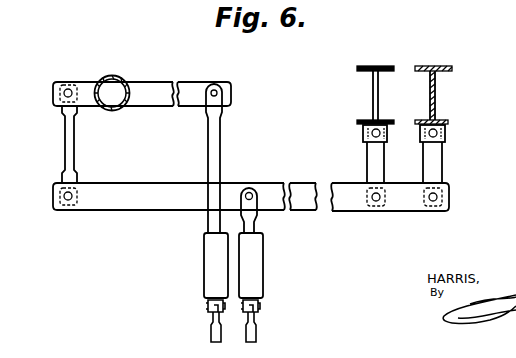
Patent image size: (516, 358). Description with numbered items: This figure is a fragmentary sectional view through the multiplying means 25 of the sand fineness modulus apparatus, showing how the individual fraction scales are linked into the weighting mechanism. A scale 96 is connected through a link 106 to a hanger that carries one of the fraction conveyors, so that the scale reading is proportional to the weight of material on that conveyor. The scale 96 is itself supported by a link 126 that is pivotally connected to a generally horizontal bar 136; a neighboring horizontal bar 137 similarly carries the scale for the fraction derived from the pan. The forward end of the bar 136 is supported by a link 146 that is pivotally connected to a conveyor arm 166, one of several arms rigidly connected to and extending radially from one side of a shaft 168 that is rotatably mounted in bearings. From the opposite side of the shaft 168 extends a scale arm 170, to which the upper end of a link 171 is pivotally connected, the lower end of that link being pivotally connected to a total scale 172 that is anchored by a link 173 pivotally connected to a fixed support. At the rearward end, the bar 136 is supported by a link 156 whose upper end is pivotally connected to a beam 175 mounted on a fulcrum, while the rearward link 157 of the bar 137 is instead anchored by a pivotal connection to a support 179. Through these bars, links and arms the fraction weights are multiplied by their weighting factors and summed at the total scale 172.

The multiplying means 25 is at (447, 111).
The scale 96 is at (262, 271).
The link 106 is at (257, 335).
The link 126 is at (255, 222).
The horizontal bar 136 is at (267, 190).
The horizontal bar 137 is at (321, 184).
The link 146 is at (65, 147).
The link 156 is at (437, 158).
The link 157 is at (371, 158).
The conveyor arm 166 is at (84, 82).
The shaft 168 is at (114, 76).
The scale arm 170 is at (163, 85).
The link 171 is at (207, 150).
The total scale 172 is at (207, 259).
The link 173 is at (211, 333).
The beam 175 is at (452, 68).
The support 179 is at (357, 68).